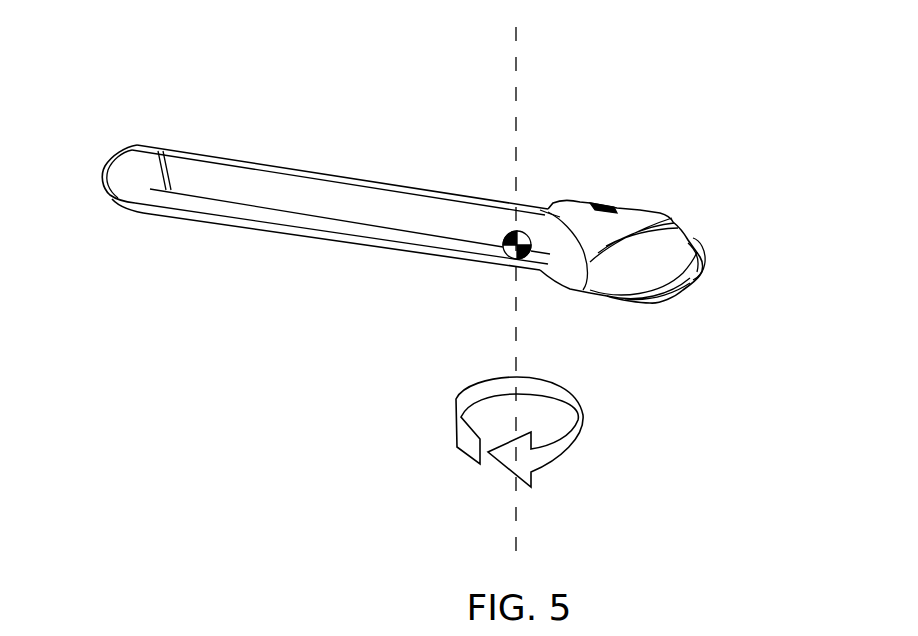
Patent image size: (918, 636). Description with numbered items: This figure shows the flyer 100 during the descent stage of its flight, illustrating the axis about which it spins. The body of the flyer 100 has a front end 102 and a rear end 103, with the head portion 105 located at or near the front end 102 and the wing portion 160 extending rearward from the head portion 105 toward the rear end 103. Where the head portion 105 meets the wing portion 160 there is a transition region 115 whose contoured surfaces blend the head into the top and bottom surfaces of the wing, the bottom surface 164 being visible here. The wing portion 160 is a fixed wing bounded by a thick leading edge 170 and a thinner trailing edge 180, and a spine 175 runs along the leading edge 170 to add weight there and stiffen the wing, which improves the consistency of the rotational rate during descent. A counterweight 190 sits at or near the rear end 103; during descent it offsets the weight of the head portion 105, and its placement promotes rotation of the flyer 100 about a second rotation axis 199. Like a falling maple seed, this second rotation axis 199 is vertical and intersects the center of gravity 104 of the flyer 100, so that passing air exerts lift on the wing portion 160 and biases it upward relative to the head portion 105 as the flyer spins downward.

The flyer 100 is at (423, 183).
The front end 102 is at (662, 238).
The rear end 103 is at (122, 140).
The center of gravity 104 is at (506, 248).
The head portion 105 is at (664, 200).
The transition region 115 is at (556, 268).
The wing portion 160 is at (240, 143).
The bottom surface 164 is at (333, 200).
The leading edge 170 is at (372, 248).
The spine 175 is at (218, 223).
The trailing edge 180 is at (285, 167).
The counterweight 190 is at (132, 173).
The second rotation axis 199 is at (515, 128).